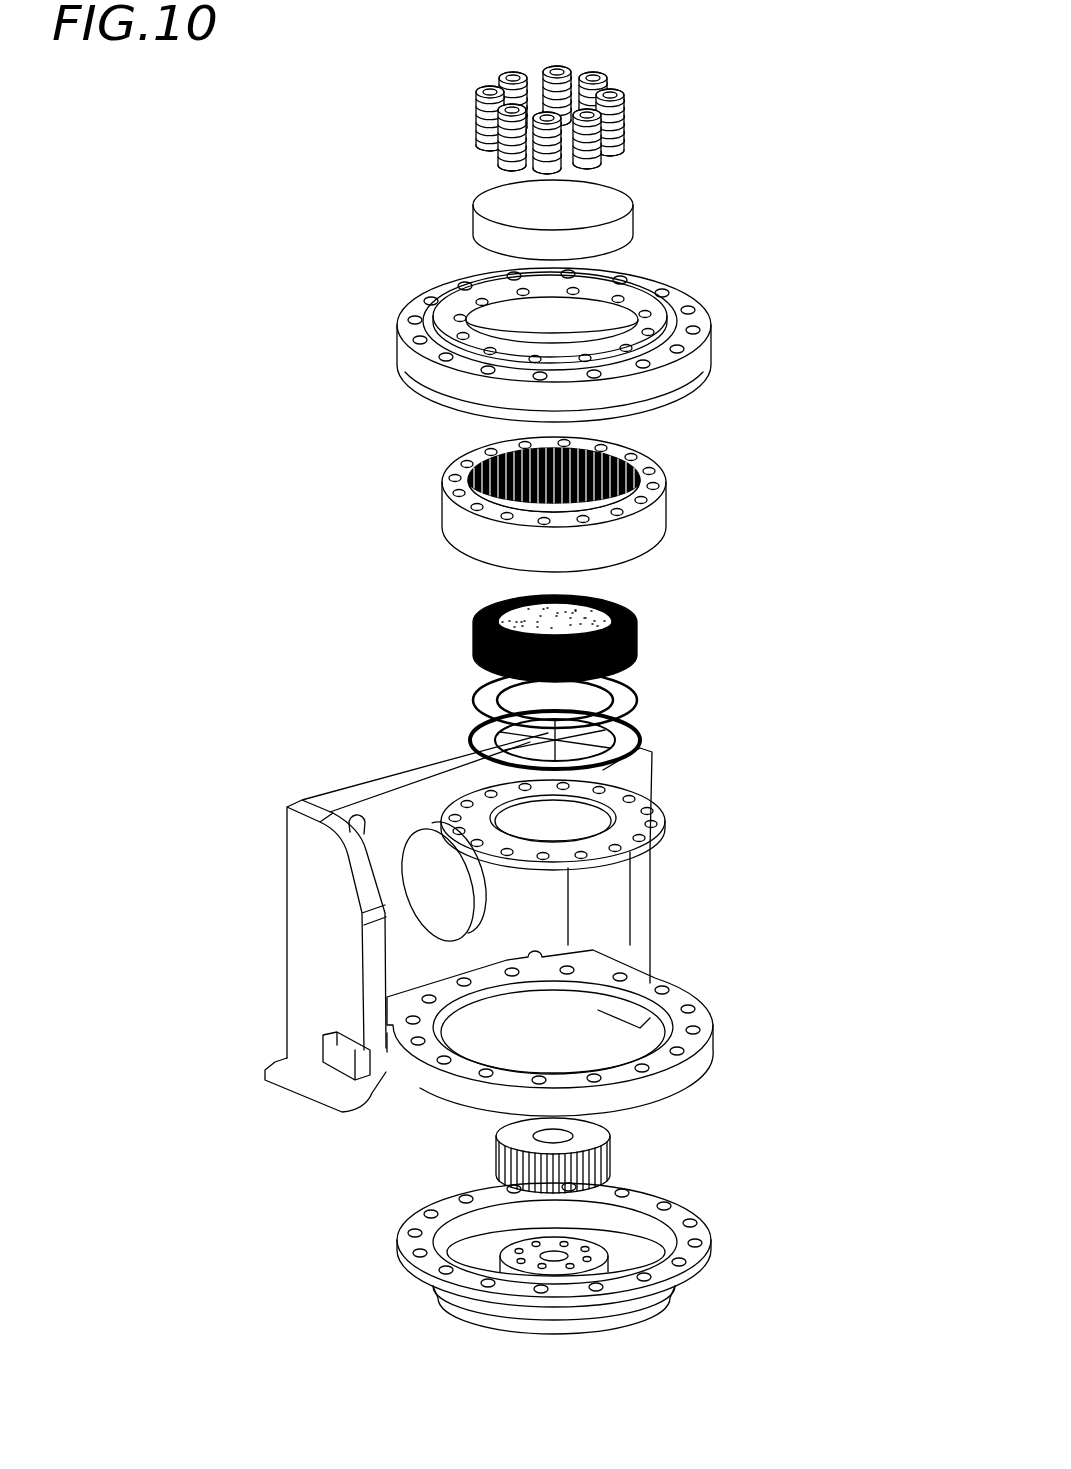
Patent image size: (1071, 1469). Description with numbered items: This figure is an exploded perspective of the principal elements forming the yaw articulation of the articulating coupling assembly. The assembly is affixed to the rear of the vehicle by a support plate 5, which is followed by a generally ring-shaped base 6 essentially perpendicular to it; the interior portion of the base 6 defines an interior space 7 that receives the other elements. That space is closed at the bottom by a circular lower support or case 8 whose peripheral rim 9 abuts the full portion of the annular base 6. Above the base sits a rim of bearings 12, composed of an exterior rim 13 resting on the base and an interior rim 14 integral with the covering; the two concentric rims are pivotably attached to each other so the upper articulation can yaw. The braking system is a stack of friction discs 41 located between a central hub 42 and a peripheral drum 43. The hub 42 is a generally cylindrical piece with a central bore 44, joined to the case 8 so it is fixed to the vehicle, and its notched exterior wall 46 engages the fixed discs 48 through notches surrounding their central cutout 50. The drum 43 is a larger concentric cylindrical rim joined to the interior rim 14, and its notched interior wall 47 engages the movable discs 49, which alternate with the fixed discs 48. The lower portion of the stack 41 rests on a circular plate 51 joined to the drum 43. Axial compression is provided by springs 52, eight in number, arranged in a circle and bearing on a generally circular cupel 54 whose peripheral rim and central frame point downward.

The support plate 5 is at (484, 924).
The base 6 is at (593, 1003).
The interior space 7 is at (568, 1042).
The lower support or case 8 is at (547, 1265).
The peripheral rim 9 is at (702, 1233).
The rim of bearings 12 is at (529, 316).
The exterior rim 13 is at (700, 367).
The interior rim 14 is at (647, 298).
The stack of friction discs 41 is at (527, 666).
The central hub 42 is at (534, 1140).
The peripheral drum 43 is at (547, 473).
The central bore 44 is at (553, 1134).
The notched exterior wall 46 is at (605, 1160).
The notched interior wall 47 is at (607, 445).
The fixed discs 48 is at (622, 690).
The movable discs 49 is at (620, 740).
The central cutout 50 is at (585, 607).
The circular plate 51 is at (668, 800).
The springs 52 is at (650, 79).
The cupel 54 is at (452, 211).